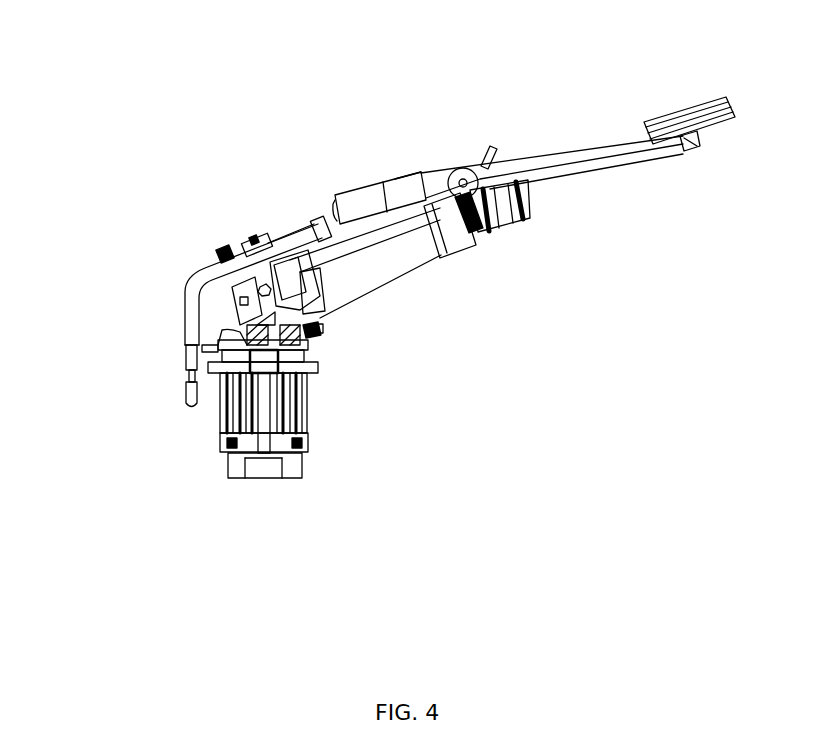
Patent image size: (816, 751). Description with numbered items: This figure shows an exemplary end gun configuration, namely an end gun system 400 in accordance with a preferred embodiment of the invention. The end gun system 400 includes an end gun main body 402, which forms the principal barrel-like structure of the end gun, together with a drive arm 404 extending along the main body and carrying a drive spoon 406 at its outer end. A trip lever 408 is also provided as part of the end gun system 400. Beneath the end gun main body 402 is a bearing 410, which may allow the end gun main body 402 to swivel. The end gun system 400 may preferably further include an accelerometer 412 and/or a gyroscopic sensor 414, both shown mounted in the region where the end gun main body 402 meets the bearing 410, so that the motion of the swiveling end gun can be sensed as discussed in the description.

The end gun system 400 is at (326, 67).
The end gun main body 402 is at (387, 260).
The drive arm 404 is at (567, 163).
The drive spoon 406 is at (693, 103).
The trip lever 408 is at (208, 278).
The bearing 410 is at (300, 412).
The accelerometer 412 is at (225, 325).
The gyroscopic sensor 414 is at (322, 329).